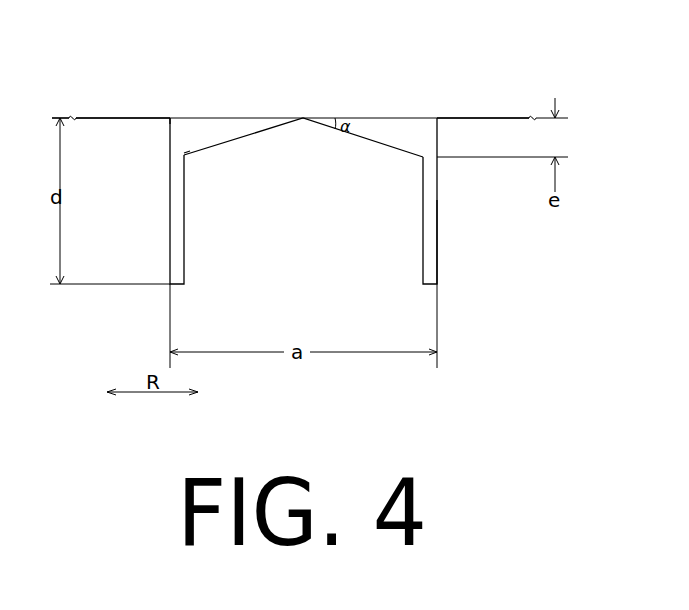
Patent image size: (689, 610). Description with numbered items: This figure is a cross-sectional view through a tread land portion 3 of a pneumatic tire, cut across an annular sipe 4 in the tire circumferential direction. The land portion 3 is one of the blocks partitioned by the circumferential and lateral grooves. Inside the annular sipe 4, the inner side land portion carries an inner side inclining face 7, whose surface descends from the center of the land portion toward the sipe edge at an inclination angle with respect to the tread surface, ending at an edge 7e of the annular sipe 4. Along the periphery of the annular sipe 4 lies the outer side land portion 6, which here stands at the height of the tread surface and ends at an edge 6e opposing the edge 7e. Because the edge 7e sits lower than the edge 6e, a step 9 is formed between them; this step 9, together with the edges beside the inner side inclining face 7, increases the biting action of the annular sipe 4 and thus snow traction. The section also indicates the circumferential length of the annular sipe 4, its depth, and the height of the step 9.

The land portion 3 is at (102, 118).
The annular sipe 4 is at (437, 262).
The outer side land portion 6 is at (135, 118).
The edge of outer side land portion 6e is at (172, 138).
The inner side inclining face 7 is at (237, 139).
The edge of inner side inclining face 7e is at (184, 153).
The step 9 is at (181, 152).